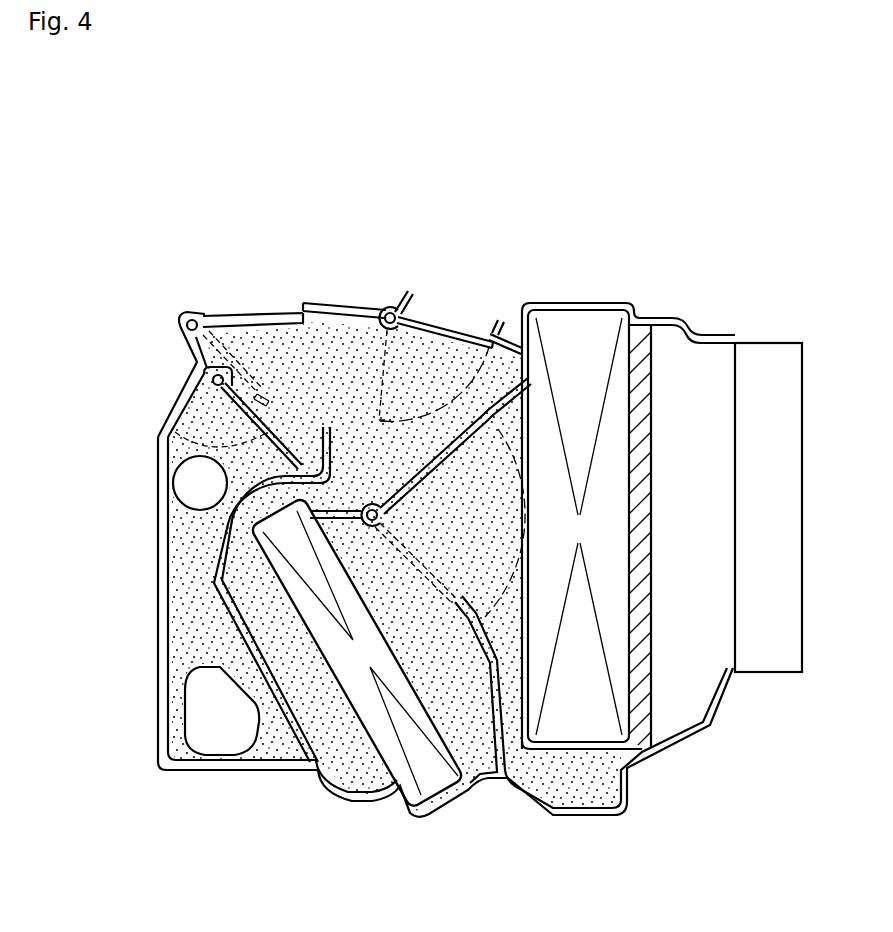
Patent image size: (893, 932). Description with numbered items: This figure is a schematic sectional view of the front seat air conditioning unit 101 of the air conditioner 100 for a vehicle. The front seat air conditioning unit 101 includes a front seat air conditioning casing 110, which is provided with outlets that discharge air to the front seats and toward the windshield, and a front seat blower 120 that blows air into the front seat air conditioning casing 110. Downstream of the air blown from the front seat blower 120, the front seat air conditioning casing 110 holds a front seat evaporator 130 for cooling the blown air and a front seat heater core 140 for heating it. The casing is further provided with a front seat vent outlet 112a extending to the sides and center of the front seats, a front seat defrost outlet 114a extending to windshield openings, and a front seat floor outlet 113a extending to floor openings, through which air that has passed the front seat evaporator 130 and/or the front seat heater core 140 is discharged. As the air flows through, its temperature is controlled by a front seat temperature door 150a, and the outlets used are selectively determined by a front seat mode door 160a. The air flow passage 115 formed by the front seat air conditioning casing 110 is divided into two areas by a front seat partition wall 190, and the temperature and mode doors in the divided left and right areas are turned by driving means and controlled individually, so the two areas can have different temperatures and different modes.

The air conditioner 100 is at (125, 160).
The front seat air conditioning unit 101 is at (145, 290).
The front seat air conditioning casing 110 is at (218, 767).
The front seat vent outlet 112a is at (237, 333).
The front seat floor outlet 113a is at (178, 492).
The front seat defrost outlet 114a is at (472, 330).
The air flow passage 115 is at (567, 775).
The front seat blower 120 is at (782, 522).
The front seat evaporator 130 is at (602, 727).
The front seat heater core 140 is at (433, 787).
The front seat temperature door 150a is at (455, 448).
The front seat mode door 160a is at (263, 396).
The front seat partition wall 190 is at (653, 693).